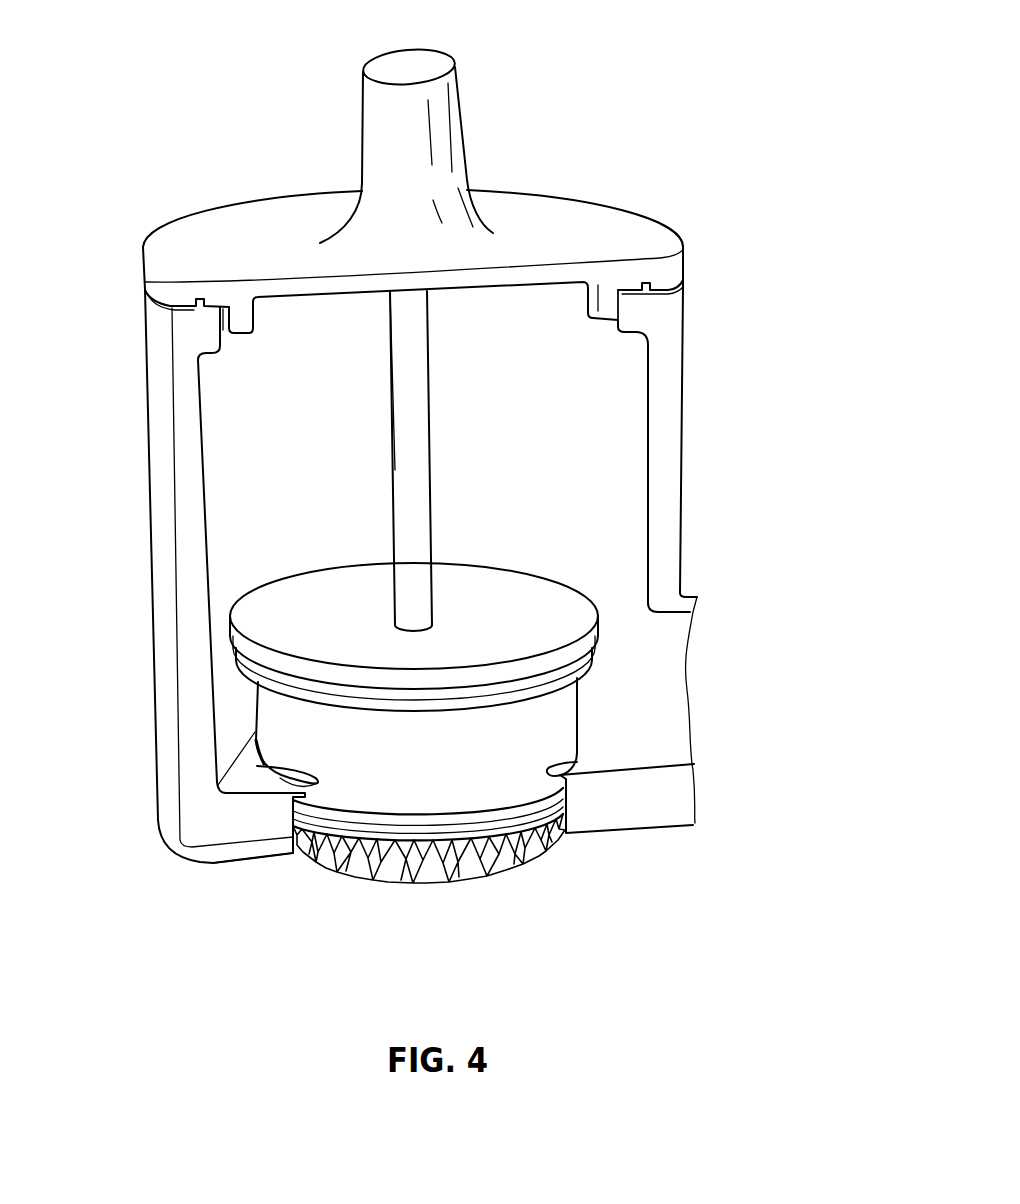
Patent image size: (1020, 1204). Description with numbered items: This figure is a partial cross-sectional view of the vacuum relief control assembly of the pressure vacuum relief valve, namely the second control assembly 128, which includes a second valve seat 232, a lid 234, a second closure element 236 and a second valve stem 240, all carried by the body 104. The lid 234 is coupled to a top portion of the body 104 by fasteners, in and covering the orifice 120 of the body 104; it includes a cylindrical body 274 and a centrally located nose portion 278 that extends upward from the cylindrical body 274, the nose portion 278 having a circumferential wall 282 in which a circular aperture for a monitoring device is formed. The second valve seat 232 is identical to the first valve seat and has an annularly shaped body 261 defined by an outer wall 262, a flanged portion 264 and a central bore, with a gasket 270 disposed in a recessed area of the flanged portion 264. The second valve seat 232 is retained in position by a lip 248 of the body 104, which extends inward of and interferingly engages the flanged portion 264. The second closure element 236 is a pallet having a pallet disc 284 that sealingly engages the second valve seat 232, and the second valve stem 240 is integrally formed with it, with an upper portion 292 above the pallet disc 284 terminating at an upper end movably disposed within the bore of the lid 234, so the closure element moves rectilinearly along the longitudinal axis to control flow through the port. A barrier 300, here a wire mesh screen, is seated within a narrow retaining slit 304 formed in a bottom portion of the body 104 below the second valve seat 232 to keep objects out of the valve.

The body 104 is at (195, 506).
The orifice 120 is at (625, 312).
The second control assembly 128 is at (455, 181).
The second valve seat 232 is at (416, 835).
The lid 234 is at (413, 241).
The second closure element 236 is at (526, 637).
The second valve stem 240 is at (405, 455).
The lip 248 is at (257, 766).
The annularly shaped body 261 is at (474, 780).
The outer wall 262 is at (352, 743).
The flanged portion 264 is at (366, 875).
The gasket 270 is at (438, 826).
The cylindrical body 274 is at (232, 238).
The nose portion 278 is at (415, 63).
The circumferential wall 282 is at (392, 130).
The pallet disc 284 is at (553, 618).
The upper portion 292 is at (388, 366).
The barrier 300 is at (545, 853).
The retaining slit 304 is at (240, 847).